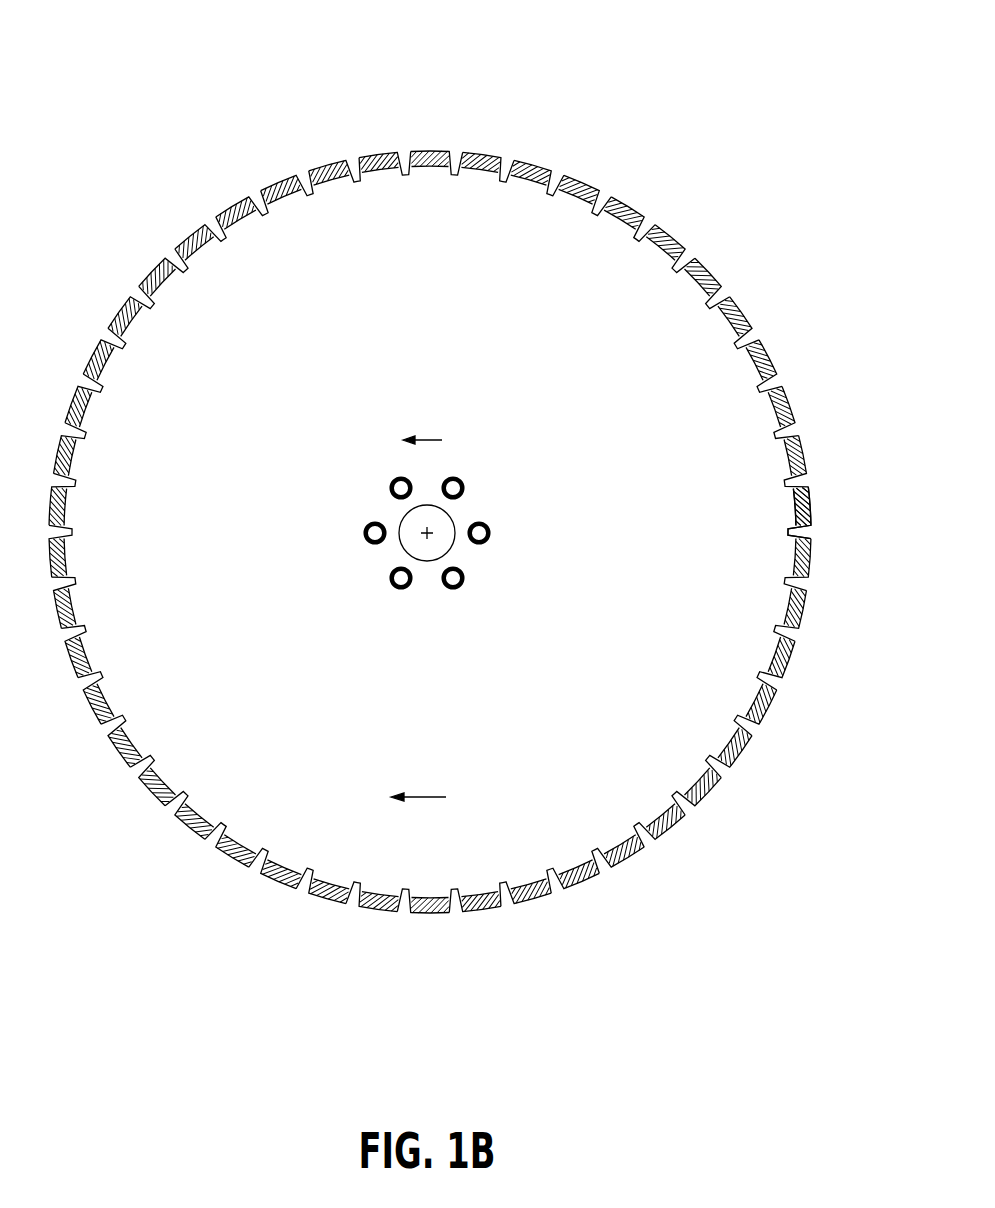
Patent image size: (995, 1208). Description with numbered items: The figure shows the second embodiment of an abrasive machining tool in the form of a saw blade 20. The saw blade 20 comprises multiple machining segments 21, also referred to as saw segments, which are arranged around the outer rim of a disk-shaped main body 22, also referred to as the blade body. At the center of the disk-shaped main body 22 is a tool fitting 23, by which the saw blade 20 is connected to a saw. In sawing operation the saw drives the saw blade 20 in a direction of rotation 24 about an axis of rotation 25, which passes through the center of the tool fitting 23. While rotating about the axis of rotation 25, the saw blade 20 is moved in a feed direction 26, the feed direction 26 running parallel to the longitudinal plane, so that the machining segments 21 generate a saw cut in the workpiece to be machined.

The saw blade 20 is at (462, 500).
The machining segments 21 is at (428, 150).
The disk-shaped main body 22 is at (768, 532).
The tool fitting 23 is at (517, 528).
The direction of rotation 24 is at (423, 437).
The axis of rotation 25 is at (425, 605).
The feed direction 26 is at (422, 796).